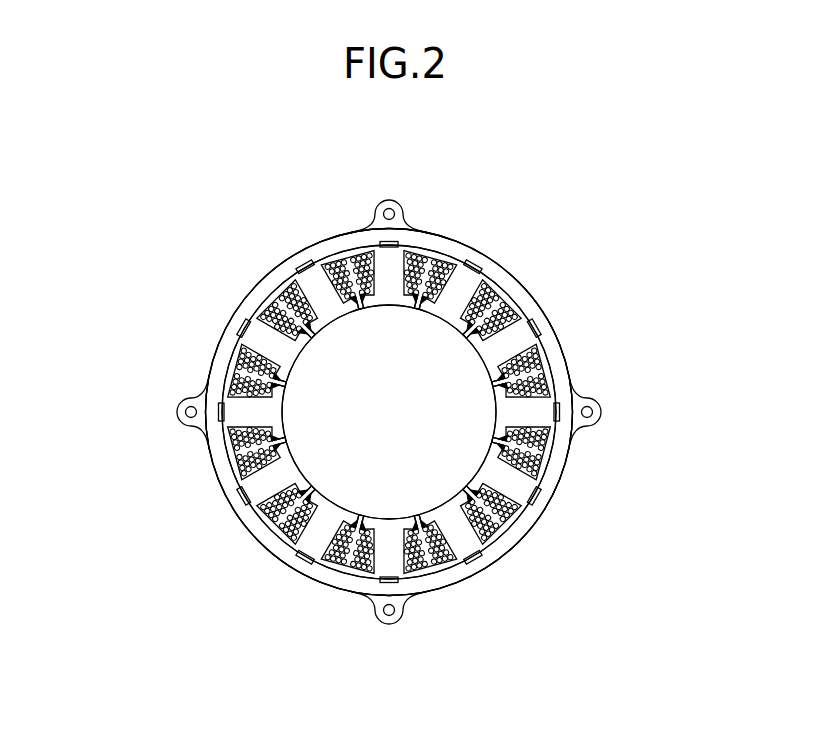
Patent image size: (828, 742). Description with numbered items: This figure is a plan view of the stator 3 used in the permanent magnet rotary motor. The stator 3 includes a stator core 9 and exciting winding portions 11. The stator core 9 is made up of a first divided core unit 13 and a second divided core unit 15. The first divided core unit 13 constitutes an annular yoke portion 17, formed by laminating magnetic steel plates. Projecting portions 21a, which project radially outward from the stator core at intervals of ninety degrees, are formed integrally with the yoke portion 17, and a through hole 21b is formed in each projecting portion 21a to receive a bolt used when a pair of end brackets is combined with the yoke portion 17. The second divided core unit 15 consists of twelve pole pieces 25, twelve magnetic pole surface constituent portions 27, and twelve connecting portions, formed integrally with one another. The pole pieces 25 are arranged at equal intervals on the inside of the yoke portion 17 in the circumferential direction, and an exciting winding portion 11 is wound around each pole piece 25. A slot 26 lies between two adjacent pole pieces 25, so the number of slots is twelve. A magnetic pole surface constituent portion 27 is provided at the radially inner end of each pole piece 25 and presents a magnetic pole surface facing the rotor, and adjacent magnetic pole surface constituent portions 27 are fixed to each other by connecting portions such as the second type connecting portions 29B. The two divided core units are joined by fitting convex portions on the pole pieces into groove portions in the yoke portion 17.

The stator 3 is at (477, 247).
The stator core 9 is at (515, 297).
The exciting winding portions 11 is at (323, 285).
The first divided core unit 13 is at (443, 248).
The second divided core unit 15 is at (538, 342).
The yoke portion 17 is at (556, 334).
The projecting portions 21a is at (390, 200).
The through hole 21b is at (377, 212).
The pole pieces 25 is at (303, 280).
The slot 26 is at (270, 292).
The magnetic pole surface constituent portions 27 is at (337, 307).
The second type connecting portions 29B is at (317, 338).